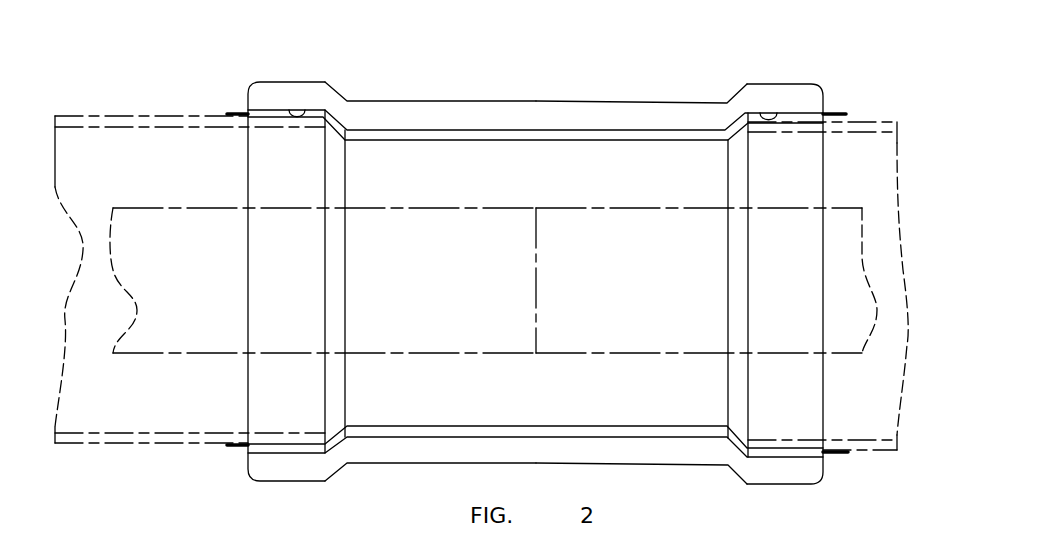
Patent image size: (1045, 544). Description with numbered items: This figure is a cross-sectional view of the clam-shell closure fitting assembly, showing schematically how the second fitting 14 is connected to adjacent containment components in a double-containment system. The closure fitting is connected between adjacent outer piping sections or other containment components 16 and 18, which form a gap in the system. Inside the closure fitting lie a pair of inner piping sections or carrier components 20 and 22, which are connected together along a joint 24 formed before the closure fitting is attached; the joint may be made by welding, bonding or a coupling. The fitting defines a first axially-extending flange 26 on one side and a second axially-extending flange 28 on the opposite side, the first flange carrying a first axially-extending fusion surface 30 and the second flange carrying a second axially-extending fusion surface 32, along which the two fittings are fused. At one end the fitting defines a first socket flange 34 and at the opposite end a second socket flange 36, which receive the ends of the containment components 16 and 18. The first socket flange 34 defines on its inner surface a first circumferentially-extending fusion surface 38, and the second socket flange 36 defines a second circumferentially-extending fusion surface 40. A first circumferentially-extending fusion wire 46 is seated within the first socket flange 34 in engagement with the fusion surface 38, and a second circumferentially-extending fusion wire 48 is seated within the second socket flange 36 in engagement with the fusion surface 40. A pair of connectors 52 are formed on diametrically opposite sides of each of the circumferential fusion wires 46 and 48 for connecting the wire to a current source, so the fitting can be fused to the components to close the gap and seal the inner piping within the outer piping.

The second fitting 14 is at (542, 92).
The containment component 16 is at (141, 114).
The containment component 18 is at (863, 121).
The carrier component 20 is at (380, 207).
The carrier component 22 is at (648, 208).
The joint 24 is at (535, 242).
The first axially-extending flange 26 is at (608, 102).
The second axially-extending flange 28 is at (400, 466).
The first axially-extending fusion surface 30 is at (437, 115).
The second axially-extending fusion surface 32 is at (650, 450).
The first socket flange 34 is at (278, 82).
The second socket flange 36 is at (790, 84).
The first circumferentially-extending fusion surface 38 is at (304, 112).
The second circumferentially-extending fusion surface 40 is at (762, 114).
The first circumferentially-extending fusion wire 46 is at (267, 118).
The second circumferentially-extending fusion wire 48 is at (787, 450).
The connectors 52 is at (228, 113).